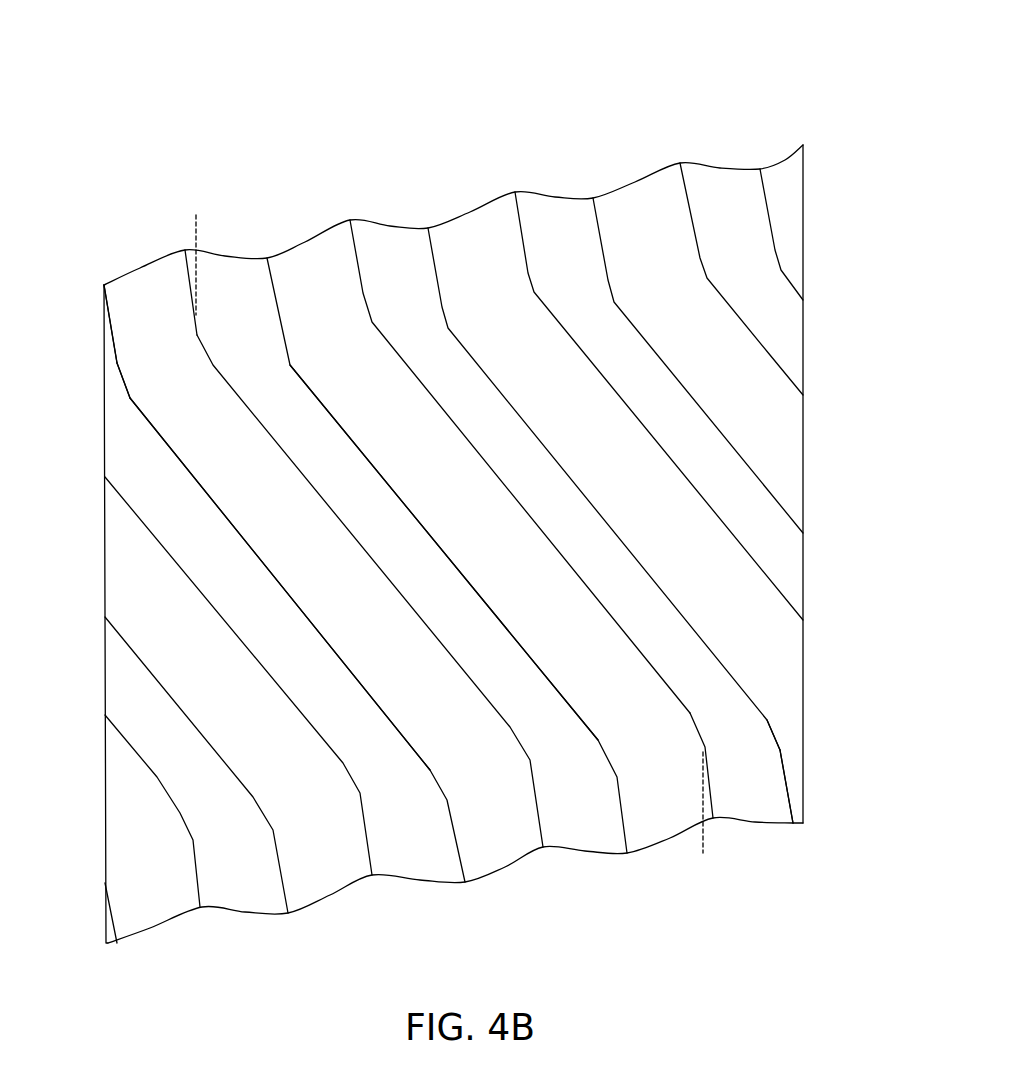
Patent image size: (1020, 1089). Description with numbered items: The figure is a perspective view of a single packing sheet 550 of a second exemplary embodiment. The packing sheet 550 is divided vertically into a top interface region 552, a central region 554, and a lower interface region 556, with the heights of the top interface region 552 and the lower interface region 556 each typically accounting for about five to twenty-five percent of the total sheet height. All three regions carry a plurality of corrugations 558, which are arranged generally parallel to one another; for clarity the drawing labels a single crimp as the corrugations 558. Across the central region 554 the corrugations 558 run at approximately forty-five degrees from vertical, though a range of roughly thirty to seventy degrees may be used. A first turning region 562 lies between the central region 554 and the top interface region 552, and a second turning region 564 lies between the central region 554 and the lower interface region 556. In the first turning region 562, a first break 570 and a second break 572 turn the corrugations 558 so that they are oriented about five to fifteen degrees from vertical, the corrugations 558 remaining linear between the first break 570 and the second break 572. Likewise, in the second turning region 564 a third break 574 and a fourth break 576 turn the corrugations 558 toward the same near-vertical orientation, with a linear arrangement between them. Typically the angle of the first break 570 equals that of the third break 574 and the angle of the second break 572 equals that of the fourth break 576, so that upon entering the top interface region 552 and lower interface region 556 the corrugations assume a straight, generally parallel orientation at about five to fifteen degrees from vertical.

The packing sheet 550 is at (726, 100).
The top interface region 552 is at (83, 288).
The central region 554 is at (83, 415).
The lower interface region 556 is at (818, 742).
The corrugations 558 is at (253, 413).
The first turning region 562 is at (83, 380).
The second turning region 564 is at (818, 703).
The first break 570 is at (213, 365).
The second break 572 is at (199, 333).
The third break 574 is at (690, 713).
The fourth break 576 is at (706, 747).